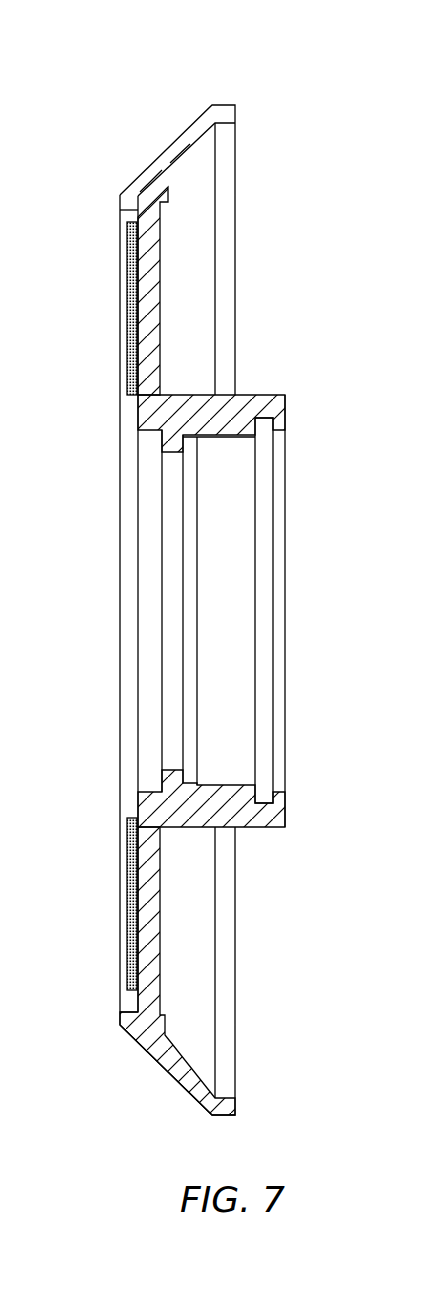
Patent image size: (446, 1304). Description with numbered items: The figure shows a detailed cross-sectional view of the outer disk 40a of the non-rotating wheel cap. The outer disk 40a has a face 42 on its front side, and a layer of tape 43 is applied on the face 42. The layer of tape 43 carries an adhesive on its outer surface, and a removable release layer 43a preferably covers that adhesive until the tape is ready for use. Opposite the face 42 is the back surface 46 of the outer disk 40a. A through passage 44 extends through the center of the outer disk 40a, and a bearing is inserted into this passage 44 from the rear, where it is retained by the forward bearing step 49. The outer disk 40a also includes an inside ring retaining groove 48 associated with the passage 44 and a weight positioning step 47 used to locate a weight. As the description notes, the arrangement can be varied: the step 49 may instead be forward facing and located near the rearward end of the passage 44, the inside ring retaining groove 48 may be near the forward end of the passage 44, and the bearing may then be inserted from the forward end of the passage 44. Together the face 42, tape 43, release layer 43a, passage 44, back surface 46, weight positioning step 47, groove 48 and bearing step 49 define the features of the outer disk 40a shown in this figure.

The outer disk 40a is at (116, 122).
The face 42 is at (138, 417).
The layer of tape 43 is at (131, 815).
The removable release layer 43a is at (124, 884).
The through passage 44 is at (158, 568).
The back surface 46 is at (148, 335).
The weight positioning step 47 is at (160, 1015).
The inside ring retaining groove 48 is at (262, 796).
The forward bearing step 49 is at (187, 440).